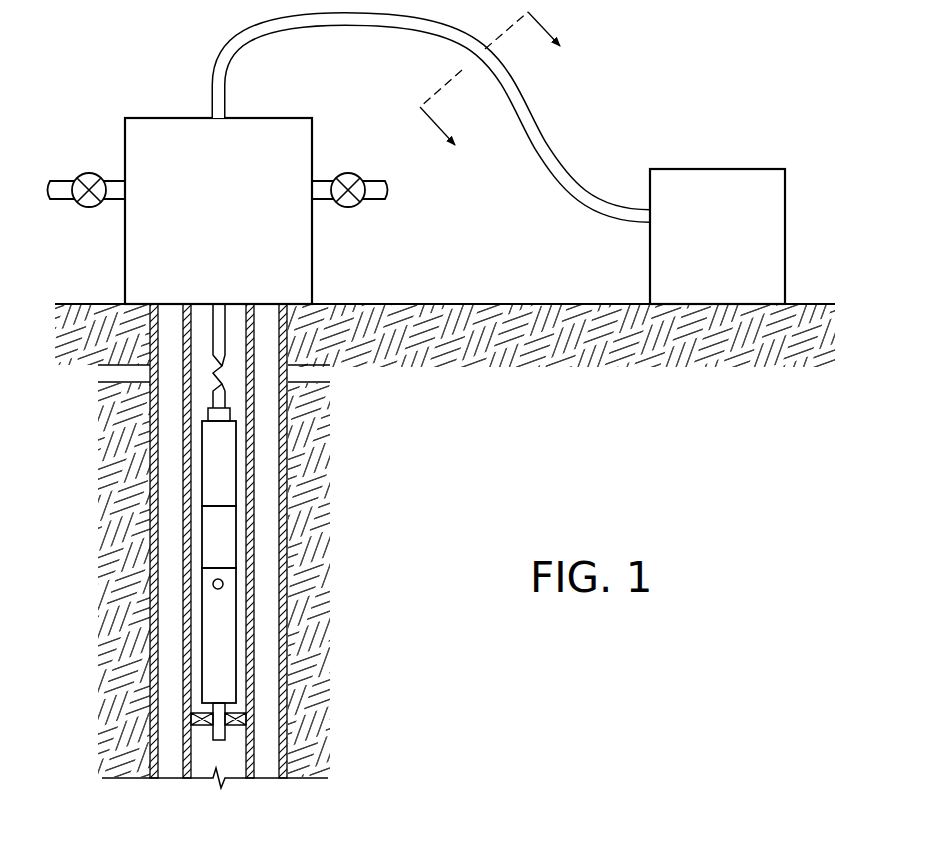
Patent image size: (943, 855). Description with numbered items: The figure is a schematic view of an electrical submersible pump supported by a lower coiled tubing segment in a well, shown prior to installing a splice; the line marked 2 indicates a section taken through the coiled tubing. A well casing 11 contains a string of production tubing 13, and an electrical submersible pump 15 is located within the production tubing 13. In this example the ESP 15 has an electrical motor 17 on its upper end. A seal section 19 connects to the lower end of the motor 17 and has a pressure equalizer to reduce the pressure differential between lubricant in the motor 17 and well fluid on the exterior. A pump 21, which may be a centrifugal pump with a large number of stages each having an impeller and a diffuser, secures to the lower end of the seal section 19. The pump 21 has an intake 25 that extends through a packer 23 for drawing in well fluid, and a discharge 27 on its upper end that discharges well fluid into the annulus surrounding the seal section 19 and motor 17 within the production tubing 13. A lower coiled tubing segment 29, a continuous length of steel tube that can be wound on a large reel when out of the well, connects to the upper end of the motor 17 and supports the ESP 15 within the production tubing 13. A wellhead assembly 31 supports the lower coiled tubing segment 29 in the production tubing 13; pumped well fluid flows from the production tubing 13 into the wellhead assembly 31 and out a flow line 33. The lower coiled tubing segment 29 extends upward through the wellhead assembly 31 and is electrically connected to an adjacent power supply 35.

The section line 2- 2 is at (502, 94).
The well casing 11 is at (285, 621).
The production tubing 13 is at (255, 575).
The electrical submersible pump 15 is at (250, 486).
The electrical motor 17 is at (206, 490).
The seal section 19 is at (206, 522).
The pump 21 is at (206, 635).
The packer 23 is at (192, 714).
The intake 25 is at (203, 731).
The discharge 27 is at (213, 588).
The lower coiled tubing segment 29 is at (211, 400).
The wellhead assembly 31 is at (305, 272).
The flow line 33 is at (386, 186).
The power supply 35 is at (652, 272).